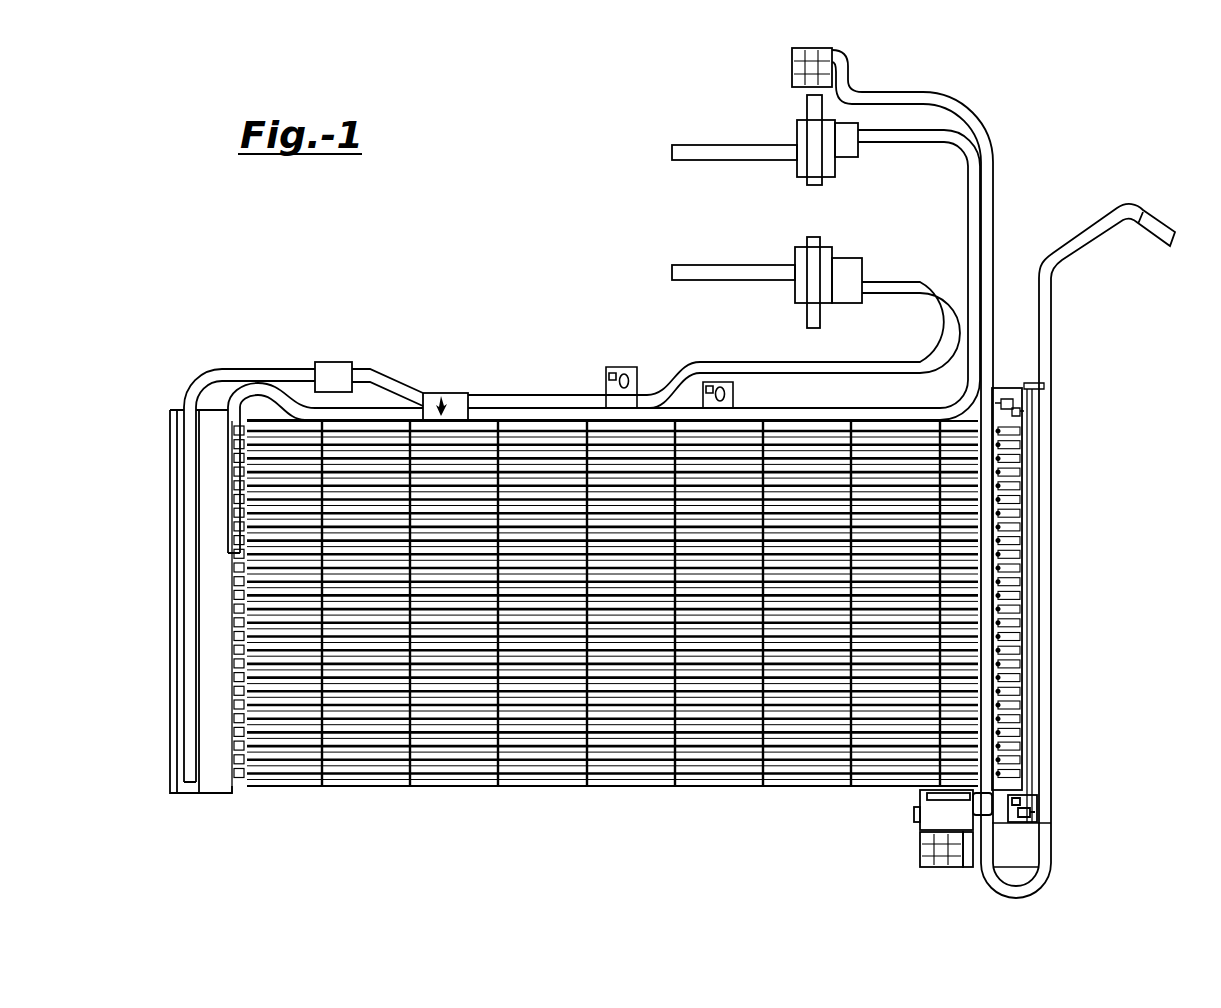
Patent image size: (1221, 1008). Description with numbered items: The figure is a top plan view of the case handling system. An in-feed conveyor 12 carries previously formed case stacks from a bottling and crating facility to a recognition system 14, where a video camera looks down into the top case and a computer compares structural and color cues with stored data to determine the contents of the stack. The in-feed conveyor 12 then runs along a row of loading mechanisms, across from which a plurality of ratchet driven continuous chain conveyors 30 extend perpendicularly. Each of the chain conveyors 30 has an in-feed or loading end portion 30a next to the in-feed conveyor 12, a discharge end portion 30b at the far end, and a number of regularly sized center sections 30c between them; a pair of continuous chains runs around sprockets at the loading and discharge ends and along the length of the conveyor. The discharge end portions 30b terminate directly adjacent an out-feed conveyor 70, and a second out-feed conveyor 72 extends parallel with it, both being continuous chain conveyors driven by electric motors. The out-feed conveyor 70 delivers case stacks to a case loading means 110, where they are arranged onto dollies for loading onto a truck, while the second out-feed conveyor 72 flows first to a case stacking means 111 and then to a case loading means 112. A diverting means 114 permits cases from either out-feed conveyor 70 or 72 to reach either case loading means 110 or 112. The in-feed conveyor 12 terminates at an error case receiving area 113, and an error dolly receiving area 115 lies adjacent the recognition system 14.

The in-feed conveyor 12 is at (1056, 332).
The recognition system 14 is at (973, 812).
The ratchet driven continuous chain conveyors 30 is at (447, 752).
The in-feed or loading end portions 30a is at (970, 485).
The discharge end portions 30b is at (252, 762).
The center sections 30c is at (777, 787).
The out-feed conveyor 70 is at (226, 466).
The second out-feed conveyor 72 is at (186, 520).
The case loading means 110 is at (793, 118).
The case stacking means 111 is at (342, 363).
The case loading means 112 is at (793, 240).
The error case receiving area 113 is at (808, 48).
The diverting means 114 is at (438, 393).
The error dolly receiving area 115 is at (920, 857).